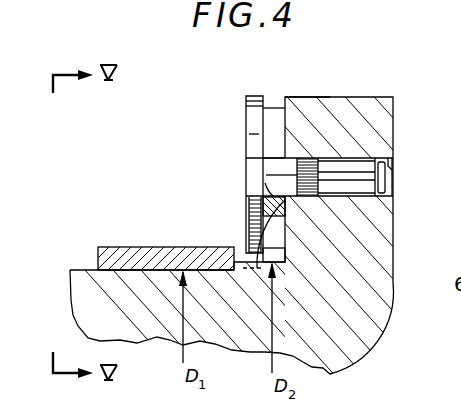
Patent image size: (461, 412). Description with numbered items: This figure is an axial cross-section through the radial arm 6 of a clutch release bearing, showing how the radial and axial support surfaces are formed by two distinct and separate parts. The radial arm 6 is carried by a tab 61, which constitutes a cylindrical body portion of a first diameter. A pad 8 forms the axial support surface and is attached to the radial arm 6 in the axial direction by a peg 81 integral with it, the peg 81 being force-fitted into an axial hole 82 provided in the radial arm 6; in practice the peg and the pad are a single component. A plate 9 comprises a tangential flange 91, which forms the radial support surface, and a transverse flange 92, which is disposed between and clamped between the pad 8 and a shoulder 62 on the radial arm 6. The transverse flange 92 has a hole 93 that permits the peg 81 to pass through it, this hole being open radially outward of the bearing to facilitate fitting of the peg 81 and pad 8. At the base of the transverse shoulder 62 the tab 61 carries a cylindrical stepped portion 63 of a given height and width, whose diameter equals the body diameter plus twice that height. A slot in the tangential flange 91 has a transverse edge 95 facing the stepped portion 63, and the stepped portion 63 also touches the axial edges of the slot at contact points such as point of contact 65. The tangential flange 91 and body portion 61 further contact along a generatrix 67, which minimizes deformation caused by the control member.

The radial arm 6 is at (396, 118).
The pad 8 is at (245, 118).
The plate 9 is at (276, 106).
The tab 61 is at (85, 268).
The shoulder 62 is at (277, 129).
The cylindrical stepped portion 63 is at (284, 251).
The point of contact 65 is at (210, 272).
The generatrix 67 is at (138, 273).
The peg 81 is at (367, 184).
The axial hole 82 is at (393, 173).
The tangential flange 91 is at (135, 250).
The transverse flange 92 is at (275, 207).
The hole 93 is at (267, 184).
The transverse edge 95 is at (247, 250).